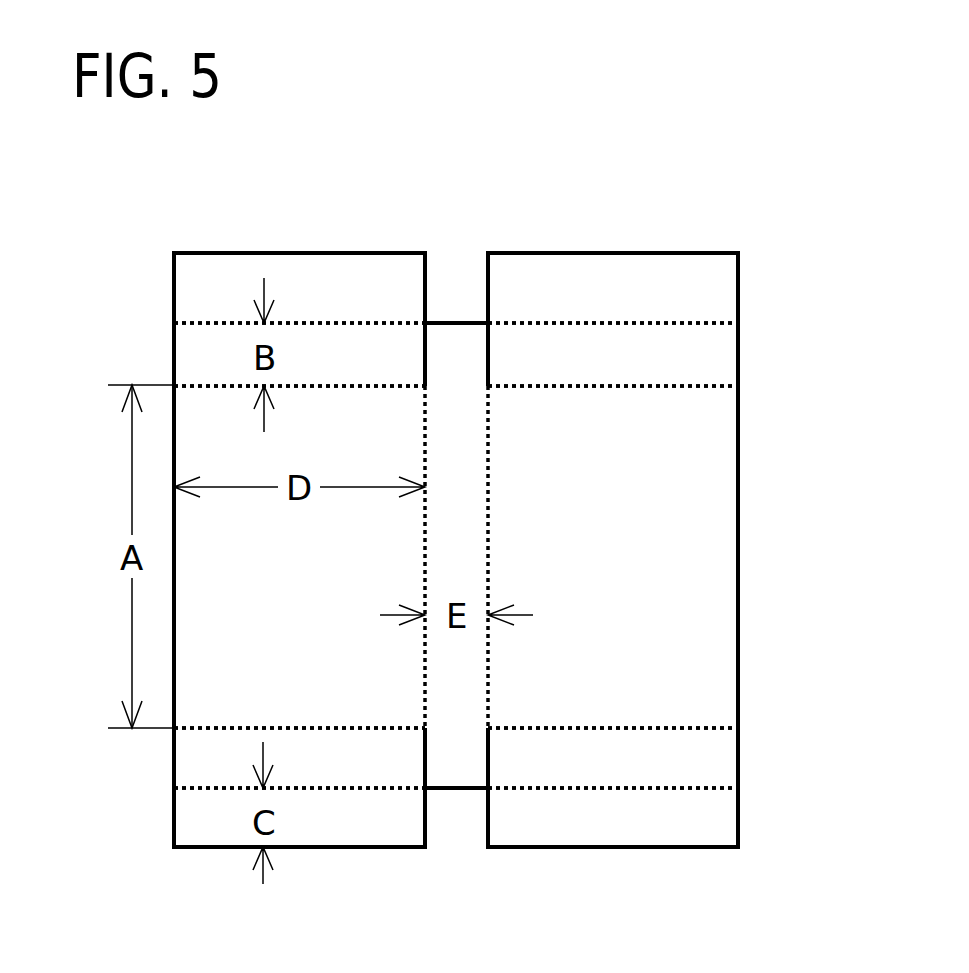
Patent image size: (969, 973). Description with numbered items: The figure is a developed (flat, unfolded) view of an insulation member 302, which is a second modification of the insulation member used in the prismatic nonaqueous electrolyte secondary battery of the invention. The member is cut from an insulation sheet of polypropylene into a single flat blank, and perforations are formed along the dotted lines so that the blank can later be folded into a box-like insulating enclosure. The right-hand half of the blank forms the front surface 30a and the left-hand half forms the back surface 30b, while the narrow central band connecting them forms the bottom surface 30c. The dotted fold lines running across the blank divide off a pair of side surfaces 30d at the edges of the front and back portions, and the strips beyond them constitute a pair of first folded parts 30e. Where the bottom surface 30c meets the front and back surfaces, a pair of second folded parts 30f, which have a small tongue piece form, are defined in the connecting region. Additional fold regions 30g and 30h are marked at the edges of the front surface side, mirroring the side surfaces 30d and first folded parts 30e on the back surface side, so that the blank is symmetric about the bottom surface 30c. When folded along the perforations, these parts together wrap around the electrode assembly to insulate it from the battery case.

The insulation member 302 is at (128, 218).
The front surface 30a is at (722, 700).
The back surface 30b is at (250, 700).
The bottom surface 30c is at (450, 523).
The side surface 30d is at (200, 350).
The first folded part 30e is at (370, 287).
The second folded part 30f is at (445, 355).
The edge region of right portion 30g is at (693, 348).
The end strip of right portion 30h is at (702, 290).